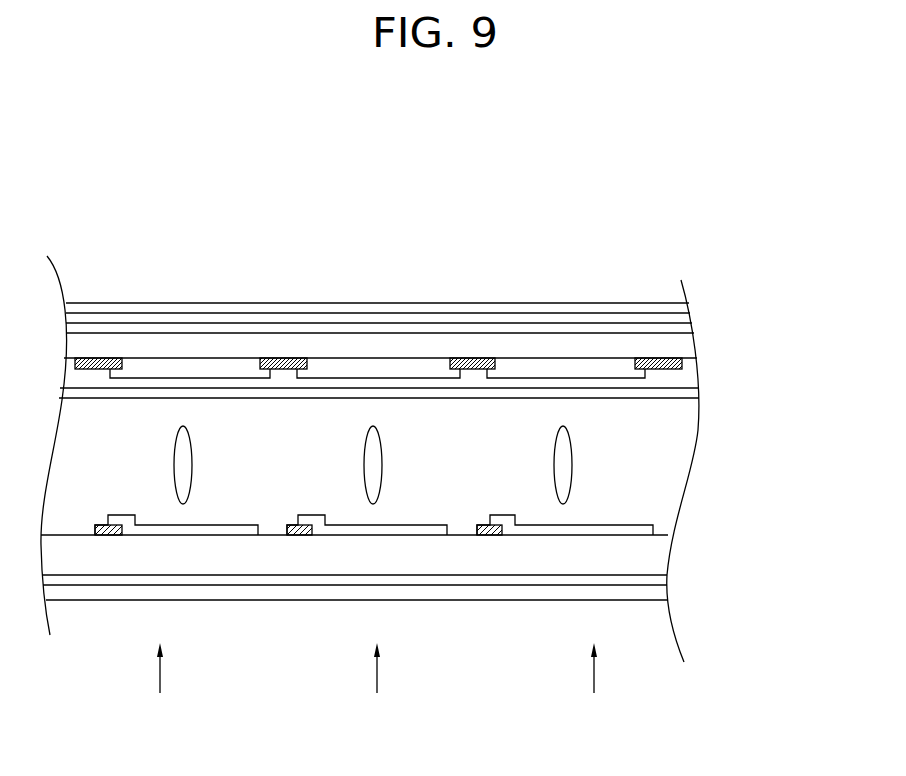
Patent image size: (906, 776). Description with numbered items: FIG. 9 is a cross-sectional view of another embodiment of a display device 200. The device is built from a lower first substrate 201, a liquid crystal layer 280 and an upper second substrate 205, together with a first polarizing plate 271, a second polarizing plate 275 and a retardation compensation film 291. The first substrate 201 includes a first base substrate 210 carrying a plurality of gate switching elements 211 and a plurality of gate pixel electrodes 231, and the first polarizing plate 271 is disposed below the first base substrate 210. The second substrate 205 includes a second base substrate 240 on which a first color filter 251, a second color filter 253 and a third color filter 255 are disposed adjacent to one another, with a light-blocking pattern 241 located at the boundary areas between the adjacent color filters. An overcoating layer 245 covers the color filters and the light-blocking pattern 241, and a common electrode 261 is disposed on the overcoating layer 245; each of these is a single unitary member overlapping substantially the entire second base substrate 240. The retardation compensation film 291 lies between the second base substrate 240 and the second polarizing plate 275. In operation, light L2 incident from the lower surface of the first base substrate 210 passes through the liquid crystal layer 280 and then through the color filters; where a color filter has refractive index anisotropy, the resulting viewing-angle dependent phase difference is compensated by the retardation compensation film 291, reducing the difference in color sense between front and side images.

The display device 200 is at (311, 240).
The first substrate 201 is at (745, 515).
The second substrate 205 is at (758, 332).
The first base substrate 210 is at (660, 550).
The gate switching element 211 is at (490, 537).
The gate pixel electrode 231 is at (653, 528).
The second base substrate 240 is at (690, 345).
The light-blocking pattern 241 is at (658, 357).
The overcoating layer 245 is at (440, 383).
The first color filter 251 is at (187, 365).
The second color filter 253 is at (382, 365).
The third color filter 255 is at (567, 365).
The common electrode 261 is at (693, 392).
The first polarizing plate 271 is at (660, 592).
The second polarizing plate 275 is at (683, 308).
The liquid crystal layer 280 is at (702, 400).
The retardation compensation film 291 is at (688, 318).
The light L2 is at (595, 667).